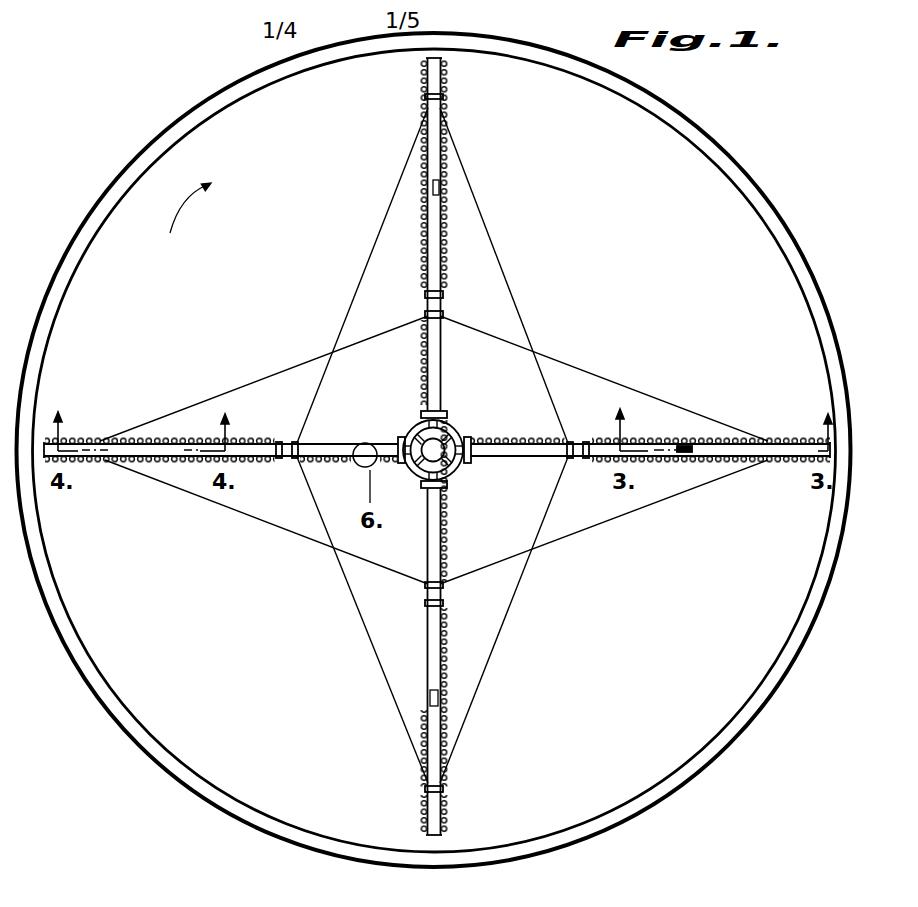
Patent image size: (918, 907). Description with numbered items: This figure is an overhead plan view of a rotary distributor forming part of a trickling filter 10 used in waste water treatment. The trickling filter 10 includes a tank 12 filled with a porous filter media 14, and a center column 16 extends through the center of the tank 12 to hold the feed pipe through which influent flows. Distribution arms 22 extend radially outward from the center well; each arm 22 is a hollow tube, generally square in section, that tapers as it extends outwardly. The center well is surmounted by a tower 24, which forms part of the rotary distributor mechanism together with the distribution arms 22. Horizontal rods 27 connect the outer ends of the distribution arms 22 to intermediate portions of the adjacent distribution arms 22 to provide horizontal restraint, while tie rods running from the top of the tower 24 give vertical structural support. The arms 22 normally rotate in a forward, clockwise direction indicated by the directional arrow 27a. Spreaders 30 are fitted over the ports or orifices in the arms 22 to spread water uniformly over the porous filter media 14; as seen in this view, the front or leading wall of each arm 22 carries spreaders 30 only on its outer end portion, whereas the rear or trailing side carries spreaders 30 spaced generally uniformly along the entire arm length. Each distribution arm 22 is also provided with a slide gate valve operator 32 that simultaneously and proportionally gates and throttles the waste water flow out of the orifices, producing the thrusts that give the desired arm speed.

The trickling filter 10 is at (230, 78).
The tank 12 is at (180, 118).
The porous filter media 14 is at (730, 222).
The center column 16 is at (449, 449).
The distribution arms 22 is at (437, 446).
The tower 24 is at (439, 443).
The horizontal rods 27 is at (243, 386).
The directional arrow 27a is at (184, 213).
The spreaders 30 is at (781, 442).
The slide gate valve operator 32 is at (688, 442).